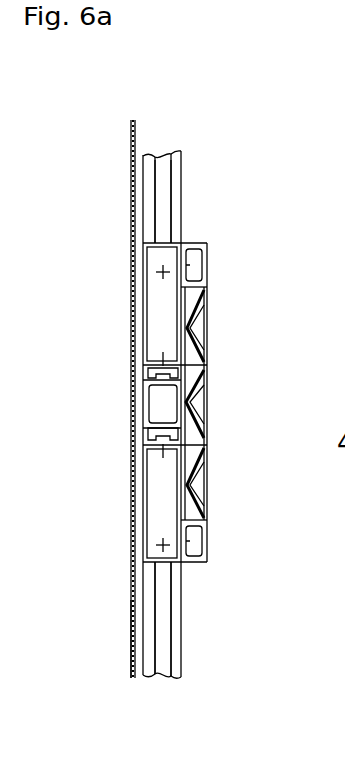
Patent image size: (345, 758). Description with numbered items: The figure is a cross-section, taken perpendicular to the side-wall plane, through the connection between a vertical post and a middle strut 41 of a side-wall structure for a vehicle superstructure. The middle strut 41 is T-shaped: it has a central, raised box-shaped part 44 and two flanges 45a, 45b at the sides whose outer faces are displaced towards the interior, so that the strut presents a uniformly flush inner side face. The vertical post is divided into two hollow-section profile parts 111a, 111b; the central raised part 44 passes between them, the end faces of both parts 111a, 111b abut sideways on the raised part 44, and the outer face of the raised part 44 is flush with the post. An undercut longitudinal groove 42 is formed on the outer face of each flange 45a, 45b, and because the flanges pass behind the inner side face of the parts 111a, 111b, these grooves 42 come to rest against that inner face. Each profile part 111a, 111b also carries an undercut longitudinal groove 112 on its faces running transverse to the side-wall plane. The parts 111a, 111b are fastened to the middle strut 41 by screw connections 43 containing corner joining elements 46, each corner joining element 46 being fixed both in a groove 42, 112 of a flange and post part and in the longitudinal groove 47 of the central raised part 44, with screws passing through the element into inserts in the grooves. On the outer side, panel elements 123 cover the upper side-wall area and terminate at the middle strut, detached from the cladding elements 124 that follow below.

The panel element 123 is at (130, 157).
The cladding element 124 is at (130, 639).
The profile part 111a is at (183, 181).
The profile part 111b is at (178, 608).
The undercut longitudinal groove 112 is at (183, 212).
The middle strut 41 is at (207, 328).
The undercut longitudinal groove 42 is at (209, 268).
The screw connection 43 is at (160, 271).
The central raised part 44 is at (152, 411).
The flange 45a is at (207, 309).
The flange 45b is at (207, 500).
The corner joining element 46 is at (160, 309).
The longitudinal groove 47 is at (207, 380).